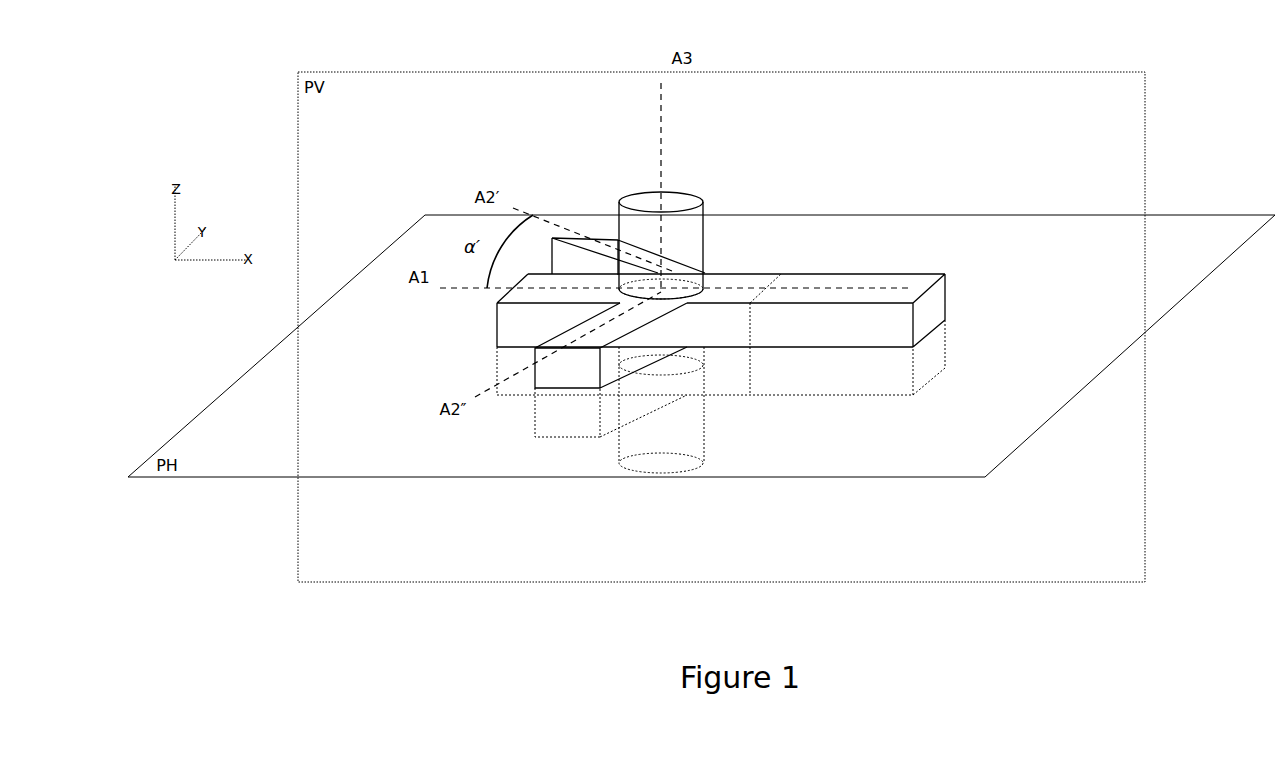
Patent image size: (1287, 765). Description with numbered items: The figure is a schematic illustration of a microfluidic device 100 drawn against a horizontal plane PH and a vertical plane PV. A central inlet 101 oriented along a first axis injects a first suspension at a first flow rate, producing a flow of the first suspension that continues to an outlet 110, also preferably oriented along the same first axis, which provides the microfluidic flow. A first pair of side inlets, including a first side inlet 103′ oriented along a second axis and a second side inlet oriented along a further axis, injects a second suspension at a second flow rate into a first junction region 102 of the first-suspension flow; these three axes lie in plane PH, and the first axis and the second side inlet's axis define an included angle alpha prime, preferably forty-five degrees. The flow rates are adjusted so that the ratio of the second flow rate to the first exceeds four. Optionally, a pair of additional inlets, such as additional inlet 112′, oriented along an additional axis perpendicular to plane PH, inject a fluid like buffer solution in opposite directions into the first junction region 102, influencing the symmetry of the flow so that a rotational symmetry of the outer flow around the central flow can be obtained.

The microfluidic device 100 is at (672, 258).
The central inlet 101 is at (505, 318).
The outlet 110 is at (903, 278).
The first junction region 102 is at (680, 290).
The first side inlet 103′ is at (607, 243).
The additional inlet 112′ is at (703, 210).